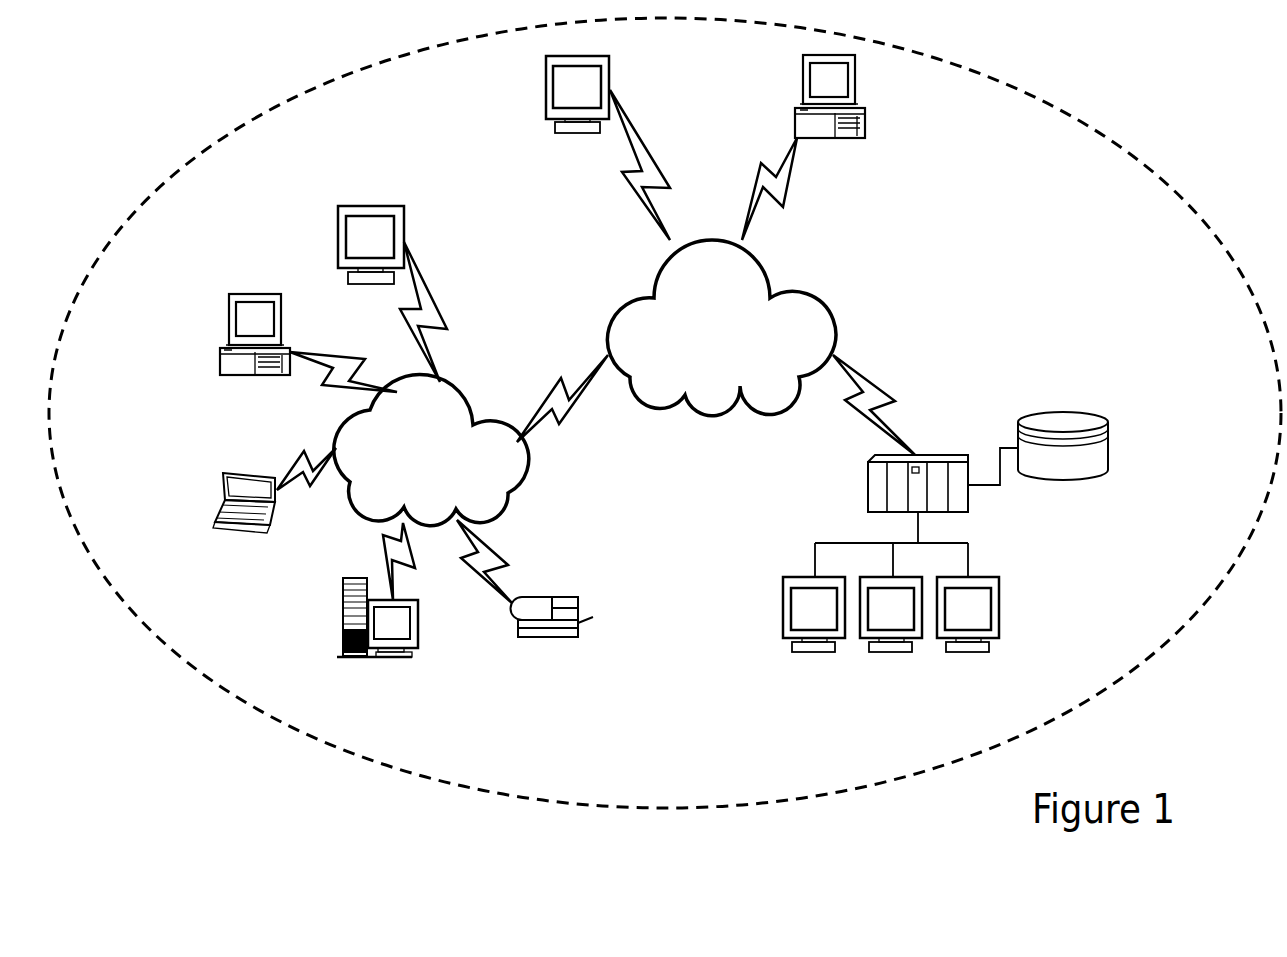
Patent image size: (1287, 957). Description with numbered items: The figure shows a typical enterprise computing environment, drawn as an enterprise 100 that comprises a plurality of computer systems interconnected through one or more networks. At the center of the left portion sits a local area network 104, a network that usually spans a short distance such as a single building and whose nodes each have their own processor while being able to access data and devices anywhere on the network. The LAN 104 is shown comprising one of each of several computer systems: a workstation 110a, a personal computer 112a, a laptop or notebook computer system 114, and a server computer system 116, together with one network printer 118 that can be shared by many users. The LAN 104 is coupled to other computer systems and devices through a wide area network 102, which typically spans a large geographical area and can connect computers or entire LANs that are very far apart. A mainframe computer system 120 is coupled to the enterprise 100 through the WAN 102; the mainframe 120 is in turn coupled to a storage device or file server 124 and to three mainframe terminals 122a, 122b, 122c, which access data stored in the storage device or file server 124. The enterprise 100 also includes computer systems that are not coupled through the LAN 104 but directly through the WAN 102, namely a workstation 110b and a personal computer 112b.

The enterprise 100 is at (203, 676).
The wide area network 102 is at (667, 400).
The local area network 104 is at (527, 490).
The workstation 110a is at (373, 285).
The workstation 110b is at (578, 136).
The personal computer 112a is at (250, 378).
The personal computer 112b is at (833, 140).
The laptop or notebook computer system 114 is at (262, 538).
The server computer system 116 is at (375, 658).
The network printer 118 is at (556, 640).
The mainframe computer system 120 is at (866, 485).
The mainframe terminal 122a is at (819, 655).
The mainframe terminal 122b is at (896, 655).
The mainframe terminal 122c is at (974, 655).
The storage device or file server 124 is at (1068, 485).